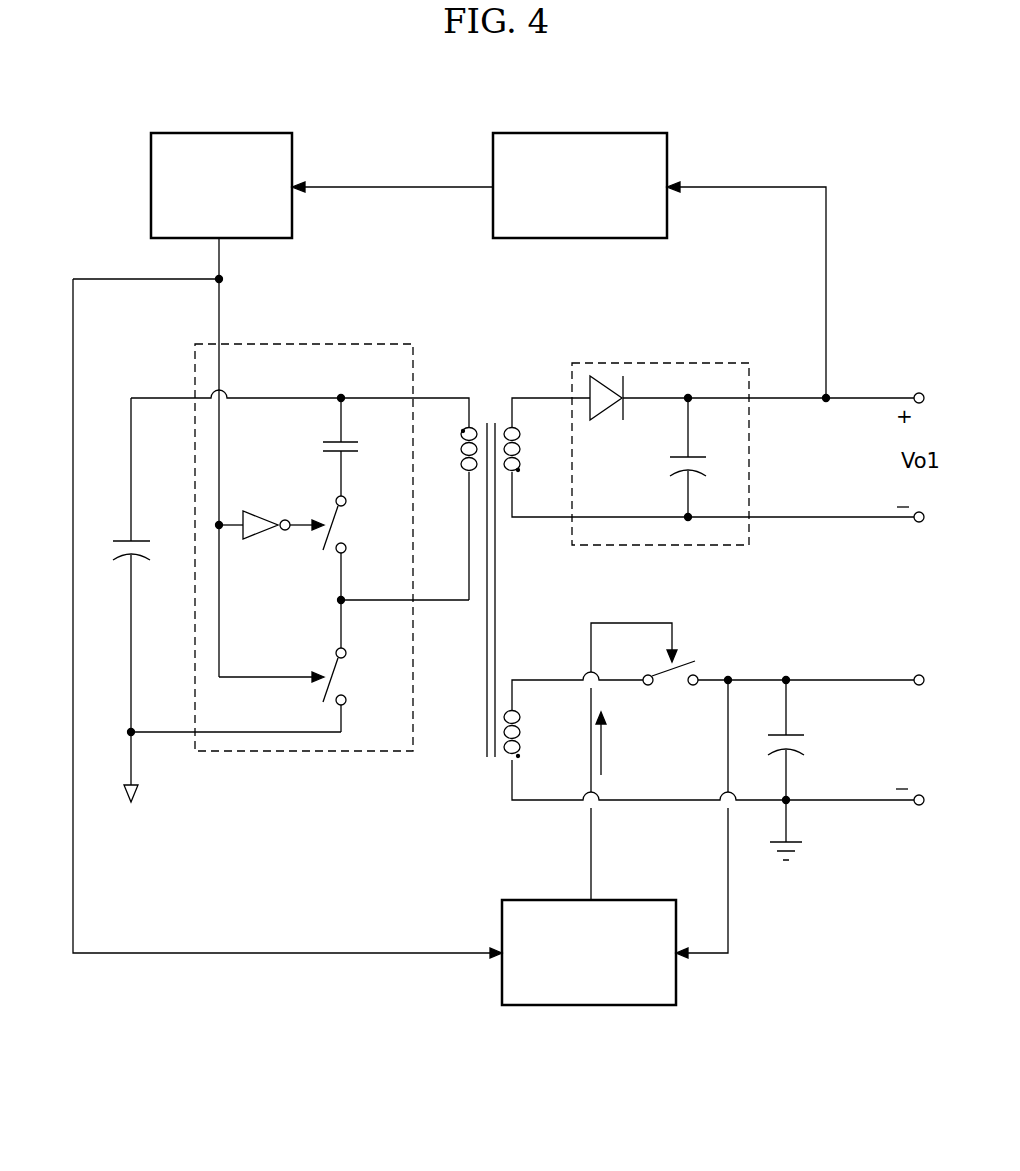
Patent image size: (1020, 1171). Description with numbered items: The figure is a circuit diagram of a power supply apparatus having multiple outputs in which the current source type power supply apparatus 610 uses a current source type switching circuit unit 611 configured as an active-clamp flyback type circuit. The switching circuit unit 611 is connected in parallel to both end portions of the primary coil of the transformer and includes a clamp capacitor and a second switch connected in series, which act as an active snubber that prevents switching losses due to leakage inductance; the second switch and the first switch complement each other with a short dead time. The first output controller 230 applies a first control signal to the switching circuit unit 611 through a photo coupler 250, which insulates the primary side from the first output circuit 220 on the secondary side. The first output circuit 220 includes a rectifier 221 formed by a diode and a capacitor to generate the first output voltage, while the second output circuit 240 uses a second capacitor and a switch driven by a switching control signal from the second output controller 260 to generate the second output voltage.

The photo coupler 250 is at (242, 133).
The first output controller 230 is at (600, 133).
The current source type power supply apparatus 610 is at (176, 385).
The current source type switching circuit unit 611 is at (305, 344).
The first output circuit 220 is at (530, 346).
The rectifier 221 is at (662, 363).
The second output circuit 240 is at (524, 830).
The second output controller 260 is at (610, 900).